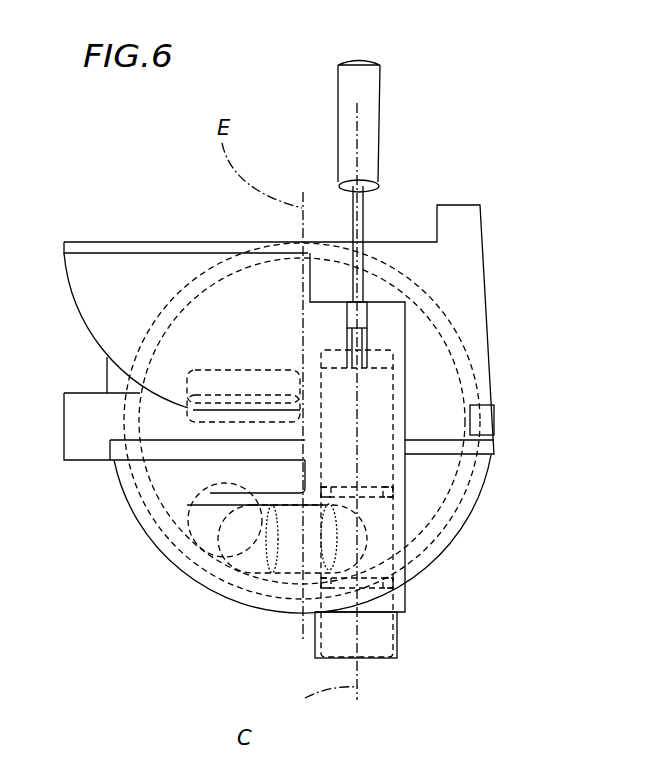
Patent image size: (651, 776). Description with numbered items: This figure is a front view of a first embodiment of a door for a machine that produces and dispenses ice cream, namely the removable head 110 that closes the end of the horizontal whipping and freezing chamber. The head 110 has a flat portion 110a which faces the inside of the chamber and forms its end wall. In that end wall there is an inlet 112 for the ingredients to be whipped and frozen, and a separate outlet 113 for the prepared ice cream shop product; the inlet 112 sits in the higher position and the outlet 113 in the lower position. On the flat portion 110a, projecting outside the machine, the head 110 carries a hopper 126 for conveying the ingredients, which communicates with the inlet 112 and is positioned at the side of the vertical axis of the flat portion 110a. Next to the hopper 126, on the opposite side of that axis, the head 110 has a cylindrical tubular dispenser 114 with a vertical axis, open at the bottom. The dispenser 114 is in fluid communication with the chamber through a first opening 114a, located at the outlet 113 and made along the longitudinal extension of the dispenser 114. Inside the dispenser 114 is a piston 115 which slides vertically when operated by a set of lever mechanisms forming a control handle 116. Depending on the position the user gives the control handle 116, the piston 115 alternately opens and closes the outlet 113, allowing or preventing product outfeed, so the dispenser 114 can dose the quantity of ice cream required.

The removable head 110 is at (503, 183).
The flat portion 110a is at (136, 488).
The inlet 112 is at (213, 383).
The outlet 113 is at (242, 535).
The cylindrical tubular dispenser 114 is at (395, 594).
The first opening 114a is at (318, 548).
The piston 115 is at (383, 505).
The control handle 116 is at (368, 78).
The hopper 126 is at (93, 267).